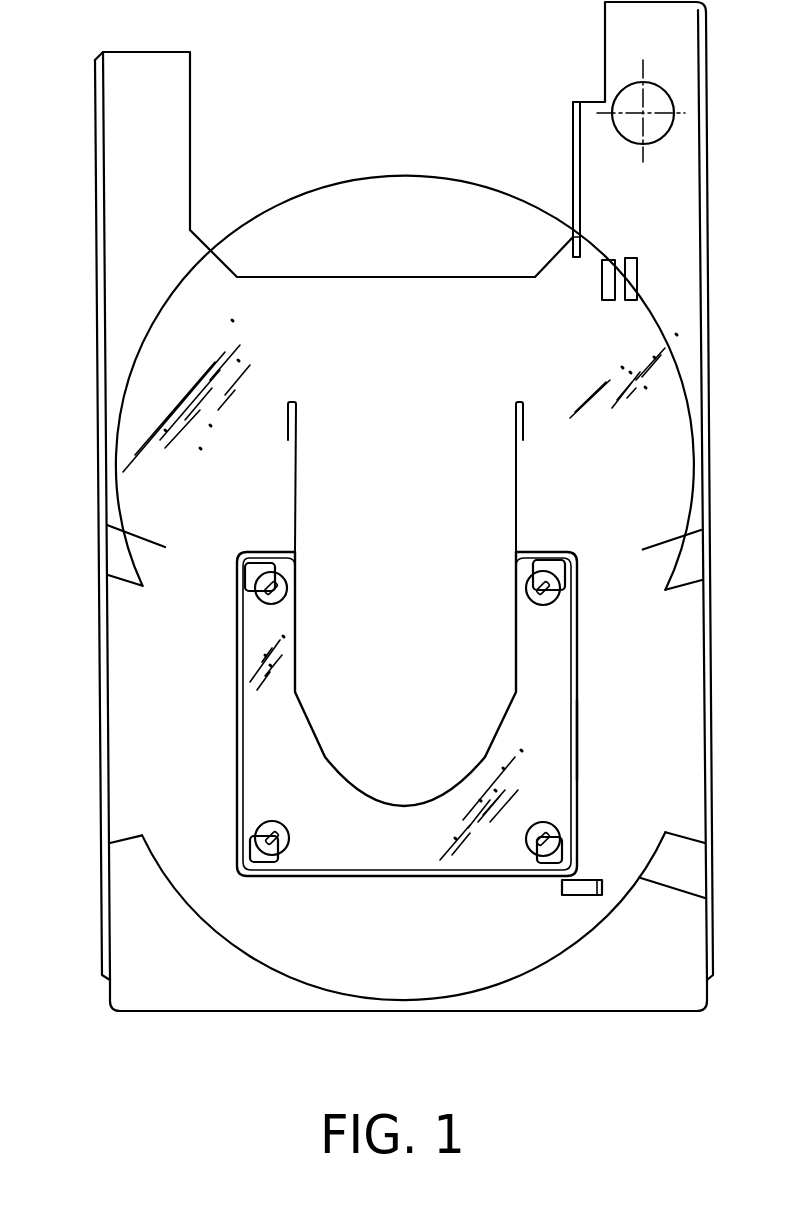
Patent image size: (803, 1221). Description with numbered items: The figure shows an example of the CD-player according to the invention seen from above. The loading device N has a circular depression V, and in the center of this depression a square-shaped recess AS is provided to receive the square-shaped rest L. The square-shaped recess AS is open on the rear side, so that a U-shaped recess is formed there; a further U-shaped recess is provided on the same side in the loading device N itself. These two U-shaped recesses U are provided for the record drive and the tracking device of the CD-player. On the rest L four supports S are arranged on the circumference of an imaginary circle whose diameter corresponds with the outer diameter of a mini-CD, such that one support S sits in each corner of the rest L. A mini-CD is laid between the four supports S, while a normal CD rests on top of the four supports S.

The loading device N is at (120, 377).
The U-shaped recesses U is at (418, 504).
The square-shaped rest L is at (258, 767).
The square-shaped recess AS is at (578, 738).
The circular depression V is at (577, 942).
The supports S is at (258, 590).